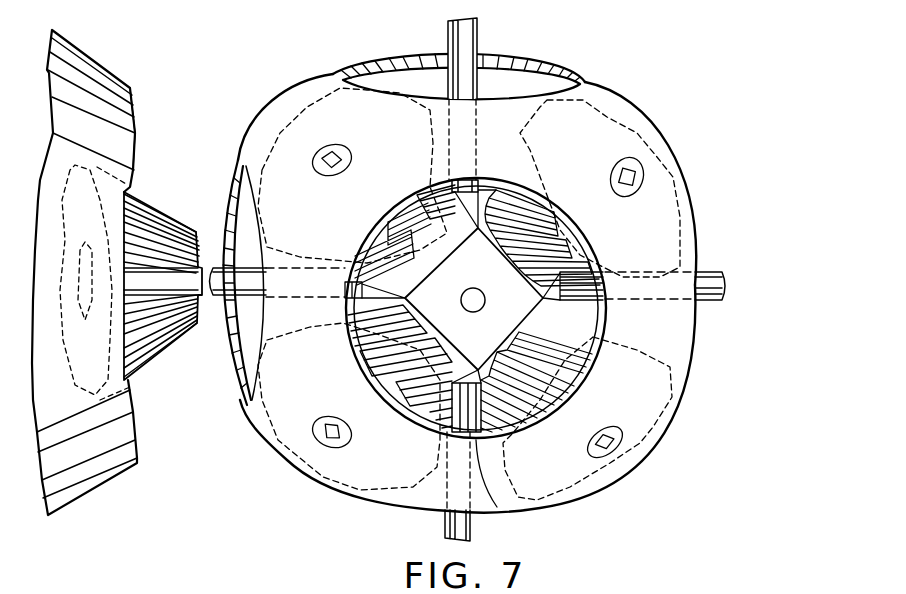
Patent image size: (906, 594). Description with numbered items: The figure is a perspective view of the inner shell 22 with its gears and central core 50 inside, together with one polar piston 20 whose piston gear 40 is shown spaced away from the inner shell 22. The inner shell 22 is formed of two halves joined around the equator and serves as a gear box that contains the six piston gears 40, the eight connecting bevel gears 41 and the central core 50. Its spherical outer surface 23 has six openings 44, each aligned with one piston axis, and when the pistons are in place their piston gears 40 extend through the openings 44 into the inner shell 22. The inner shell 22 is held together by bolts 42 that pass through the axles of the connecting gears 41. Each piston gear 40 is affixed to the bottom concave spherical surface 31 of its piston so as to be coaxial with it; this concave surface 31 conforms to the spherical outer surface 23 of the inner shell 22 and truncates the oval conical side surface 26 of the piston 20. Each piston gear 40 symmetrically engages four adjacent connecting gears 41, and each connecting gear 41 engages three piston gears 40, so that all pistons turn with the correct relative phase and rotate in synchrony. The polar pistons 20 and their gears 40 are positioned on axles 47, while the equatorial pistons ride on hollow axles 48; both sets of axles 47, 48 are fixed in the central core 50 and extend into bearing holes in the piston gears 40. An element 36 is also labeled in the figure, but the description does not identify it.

The polar piston 20 is at (135, 465).
The inner shell 22 is at (665, 152).
The spherical outer surface 23 is at (647, 117).
The oval conical side surface 26 is at (60, 483).
The bottom concave spherical surface 31 is at (137, 152).
The boss 36 is at (480, 167).
The piston gear 40 is at (167, 213).
The connecting gear 41 is at (600, 92).
The bolt 42 is at (337, 150).
The opening 44 is at (547, 60).
The axle 47 is at (215, 304).
The hollow axle 48 is at (480, 43).
The central core 50 is at (462, 345).